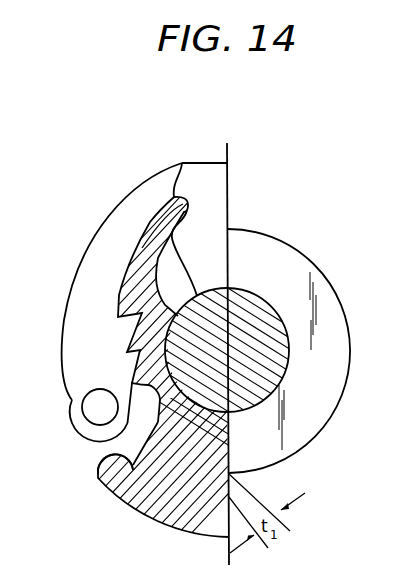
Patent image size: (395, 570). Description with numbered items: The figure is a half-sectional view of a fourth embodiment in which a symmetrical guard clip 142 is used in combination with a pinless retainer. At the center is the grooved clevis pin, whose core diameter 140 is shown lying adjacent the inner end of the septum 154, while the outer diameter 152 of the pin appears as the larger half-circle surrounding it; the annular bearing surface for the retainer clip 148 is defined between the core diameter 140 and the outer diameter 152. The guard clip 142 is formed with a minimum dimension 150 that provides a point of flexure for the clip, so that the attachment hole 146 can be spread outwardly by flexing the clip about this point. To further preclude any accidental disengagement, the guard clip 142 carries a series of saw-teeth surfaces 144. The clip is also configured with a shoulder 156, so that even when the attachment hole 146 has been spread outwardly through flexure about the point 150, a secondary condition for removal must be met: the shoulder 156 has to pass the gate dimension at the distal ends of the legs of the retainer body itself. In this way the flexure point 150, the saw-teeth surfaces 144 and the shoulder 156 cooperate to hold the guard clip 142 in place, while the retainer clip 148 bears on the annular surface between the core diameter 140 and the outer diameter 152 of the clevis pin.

The core diameter 140 is at (245, 361).
The guard clip 142 is at (110, 309).
The saw-teeth surfaces 144 is at (128, 377).
The attachment hole 146 is at (77, 408).
The retainer clip 148 is at (98, 473).
The minimum dimension 150 is at (150, 178).
The outer diameter 152 is at (327, 281).
The septum 154 is at (227, 220).
The shoulder 156 is at (196, 163).